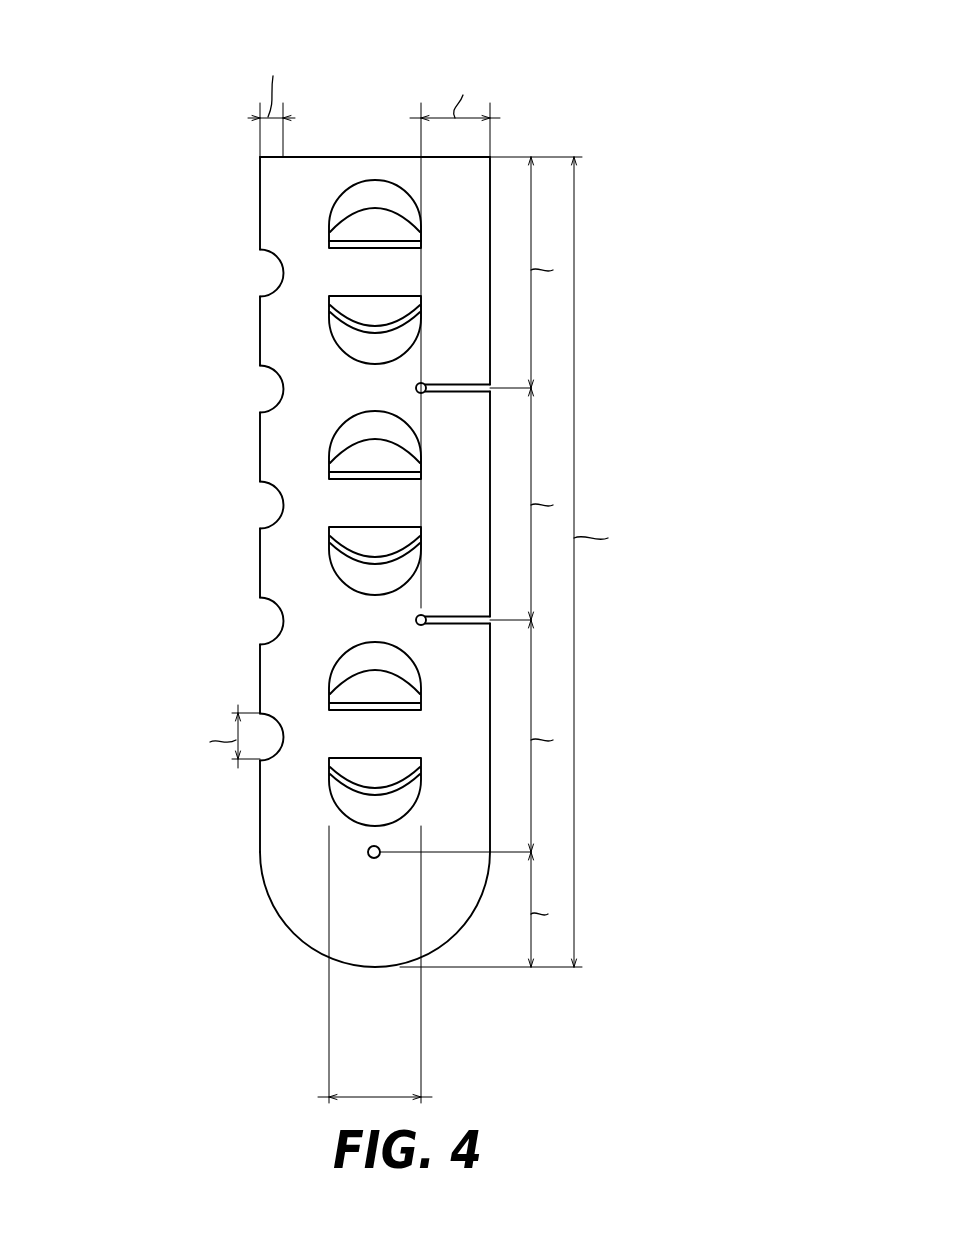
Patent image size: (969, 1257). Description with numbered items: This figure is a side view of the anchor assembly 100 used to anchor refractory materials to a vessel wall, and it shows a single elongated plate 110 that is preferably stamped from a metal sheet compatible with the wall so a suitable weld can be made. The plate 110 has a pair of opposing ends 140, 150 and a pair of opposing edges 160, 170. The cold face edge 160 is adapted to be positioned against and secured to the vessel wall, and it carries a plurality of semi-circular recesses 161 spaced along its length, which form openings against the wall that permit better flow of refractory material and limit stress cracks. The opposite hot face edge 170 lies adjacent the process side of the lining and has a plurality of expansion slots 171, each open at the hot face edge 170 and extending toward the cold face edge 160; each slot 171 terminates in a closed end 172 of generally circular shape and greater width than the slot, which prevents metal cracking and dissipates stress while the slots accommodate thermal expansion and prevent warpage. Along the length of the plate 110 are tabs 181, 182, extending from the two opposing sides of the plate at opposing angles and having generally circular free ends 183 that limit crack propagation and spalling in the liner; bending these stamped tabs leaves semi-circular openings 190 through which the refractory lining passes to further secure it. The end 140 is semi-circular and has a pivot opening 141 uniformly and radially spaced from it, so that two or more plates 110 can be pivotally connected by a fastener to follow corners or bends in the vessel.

The anchor assembly 100 is at (146, 63).
The elongated plate 110 is at (280, 817).
The end 140 is at (431, 966).
The pivot opening 141 is at (374, 859).
The end 150 is at (298, 157).
The cold face edge 160 is at (257, 325).
The recess 161 is at (283, 389).
The hot face edge 170 is at (492, 685).
The expansion slot 171 is at (478, 395).
The closed end 172 is at (415, 388).
The tab 181 is at (415, 231).
The tab 182 is at (415, 300).
The free end 183 is at (368, 562).
The opening 190 is at (365, 195).